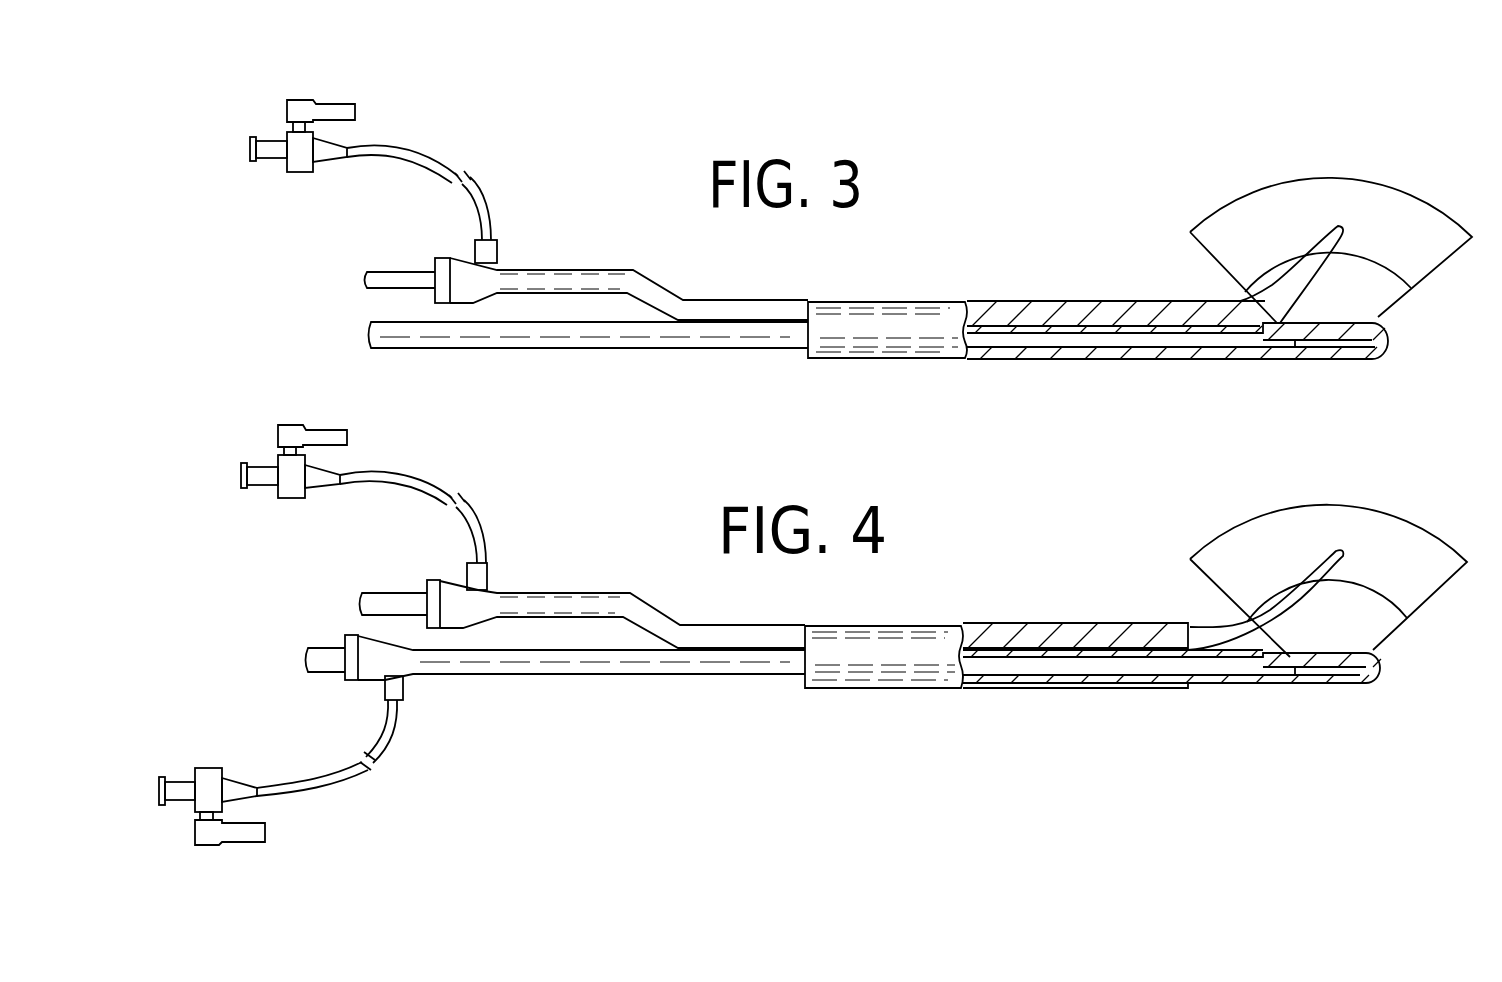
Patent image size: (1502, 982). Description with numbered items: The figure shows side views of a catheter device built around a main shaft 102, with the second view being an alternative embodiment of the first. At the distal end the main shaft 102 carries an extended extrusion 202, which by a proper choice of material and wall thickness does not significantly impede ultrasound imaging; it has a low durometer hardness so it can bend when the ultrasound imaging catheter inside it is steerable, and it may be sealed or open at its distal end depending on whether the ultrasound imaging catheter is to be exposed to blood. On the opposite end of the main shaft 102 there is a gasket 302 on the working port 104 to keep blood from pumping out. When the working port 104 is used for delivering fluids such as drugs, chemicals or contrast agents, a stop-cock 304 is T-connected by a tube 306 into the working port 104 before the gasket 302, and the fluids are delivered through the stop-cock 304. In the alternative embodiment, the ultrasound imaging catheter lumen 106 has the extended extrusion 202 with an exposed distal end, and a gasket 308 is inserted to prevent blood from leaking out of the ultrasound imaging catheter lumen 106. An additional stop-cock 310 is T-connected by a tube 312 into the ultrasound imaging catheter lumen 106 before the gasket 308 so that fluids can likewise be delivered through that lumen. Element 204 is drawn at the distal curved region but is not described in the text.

In FIG. 3, the main shaft 102 is at (903, 360).
In FIG. 4, the main shaft 102 is at (889, 686).
In FIG. 3, the working port 104 is at (1013, 316).
In FIG. 4, the working port 104 is at (1017, 640).
In FIG. 3, the ultrasound imaging catheter lumen 106 is at (1097, 345).
In FIG. 4, the ultrasound imaging catheter lumen 106 is at (1043, 668).
In FIG. 3, the extended extrusion 202 is at (1348, 360).
In FIG. 4, the extended extrusion 202 is at (1365, 687).
In FIG. 3, the curved deflectable member 204 is at (1202, 310).
In FIG. 4, the curved deflectable member 204 is at (1227, 628).
In FIG. 3, the gasket 302 is at (456, 256).
In FIG. 4, the gasket 302 is at (445, 580).
In FIG. 3, the stop-cock 304 is at (320, 101).
In FIG. 4, the stop-cock 304 is at (318, 426).
In FIG. 3, the tube 306 is at (432, 153).
In FIG. 4, the tube 306 is at (436, 488).
In FIG. 4, the gasket 308 is at (368, 682).
In FIG. 4, the additional stop-cock 310 is at (218, 847).
In FIG. 4, the tube 312 is at (337, 783).